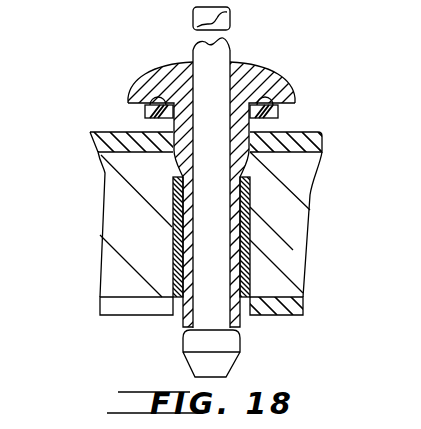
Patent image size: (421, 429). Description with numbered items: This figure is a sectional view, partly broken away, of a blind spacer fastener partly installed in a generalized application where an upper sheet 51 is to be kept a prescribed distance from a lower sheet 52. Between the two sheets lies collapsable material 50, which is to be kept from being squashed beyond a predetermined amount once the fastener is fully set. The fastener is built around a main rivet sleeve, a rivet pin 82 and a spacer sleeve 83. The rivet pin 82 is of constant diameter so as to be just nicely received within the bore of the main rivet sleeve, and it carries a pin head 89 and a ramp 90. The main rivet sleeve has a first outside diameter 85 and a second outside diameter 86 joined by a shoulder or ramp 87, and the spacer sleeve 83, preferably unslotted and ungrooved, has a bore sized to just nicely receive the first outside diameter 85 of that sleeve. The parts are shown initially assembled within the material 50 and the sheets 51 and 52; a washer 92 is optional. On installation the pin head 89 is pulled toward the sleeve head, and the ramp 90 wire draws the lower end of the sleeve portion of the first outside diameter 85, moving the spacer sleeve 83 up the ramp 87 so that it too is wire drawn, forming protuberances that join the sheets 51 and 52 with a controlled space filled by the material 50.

The collapsable material 50 is at (112, 225).
The upper sheet 51 is at (97, 138).
The lower sheet 52 is at (110, 305).
The rivet pin 82 is at (216, 250).
The spacer sleeve 83 is at (250, 205).
The first outside diameter 85 is at (248, 244).
The second outside diameter 86 is at (172, 124).
The shoulder or ramp 87 is at (247, 167).
The pin head 89 is at (195, 343).
The ramp 90 is at (237, 330).
The washer 92 is at (252, 118).